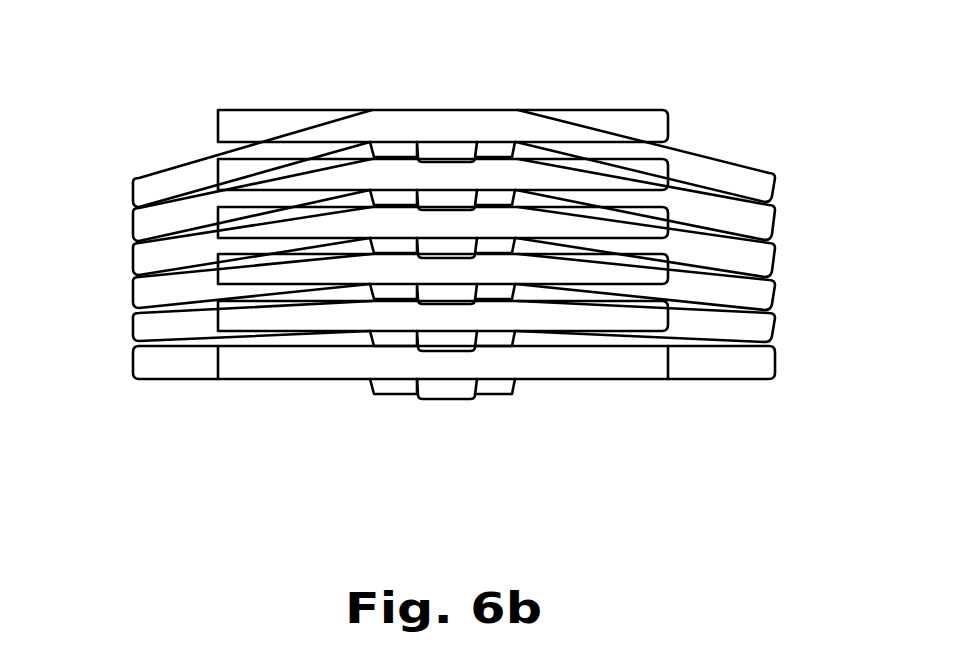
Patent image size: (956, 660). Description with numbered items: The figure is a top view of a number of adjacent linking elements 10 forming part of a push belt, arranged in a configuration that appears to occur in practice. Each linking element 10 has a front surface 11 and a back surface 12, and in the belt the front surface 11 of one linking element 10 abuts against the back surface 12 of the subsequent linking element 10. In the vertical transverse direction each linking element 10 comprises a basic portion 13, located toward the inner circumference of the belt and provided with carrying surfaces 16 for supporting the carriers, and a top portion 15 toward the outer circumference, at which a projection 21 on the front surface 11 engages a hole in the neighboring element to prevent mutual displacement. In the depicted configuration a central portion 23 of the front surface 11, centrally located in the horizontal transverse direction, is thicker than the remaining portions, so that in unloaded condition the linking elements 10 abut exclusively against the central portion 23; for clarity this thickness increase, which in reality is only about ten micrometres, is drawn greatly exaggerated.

The linking element 10 is at (574, 362).
The front surface 11 is at (645, 368).
The back surface 12 is at (451, 108).
The basic portion 13 is at (182, 184).
The top portion 15 is at (620, 125).
The carrying surface 16 is at (185, 365).
The projection 21 is at (445, 388).
The central portion 23 is at (388, 383).